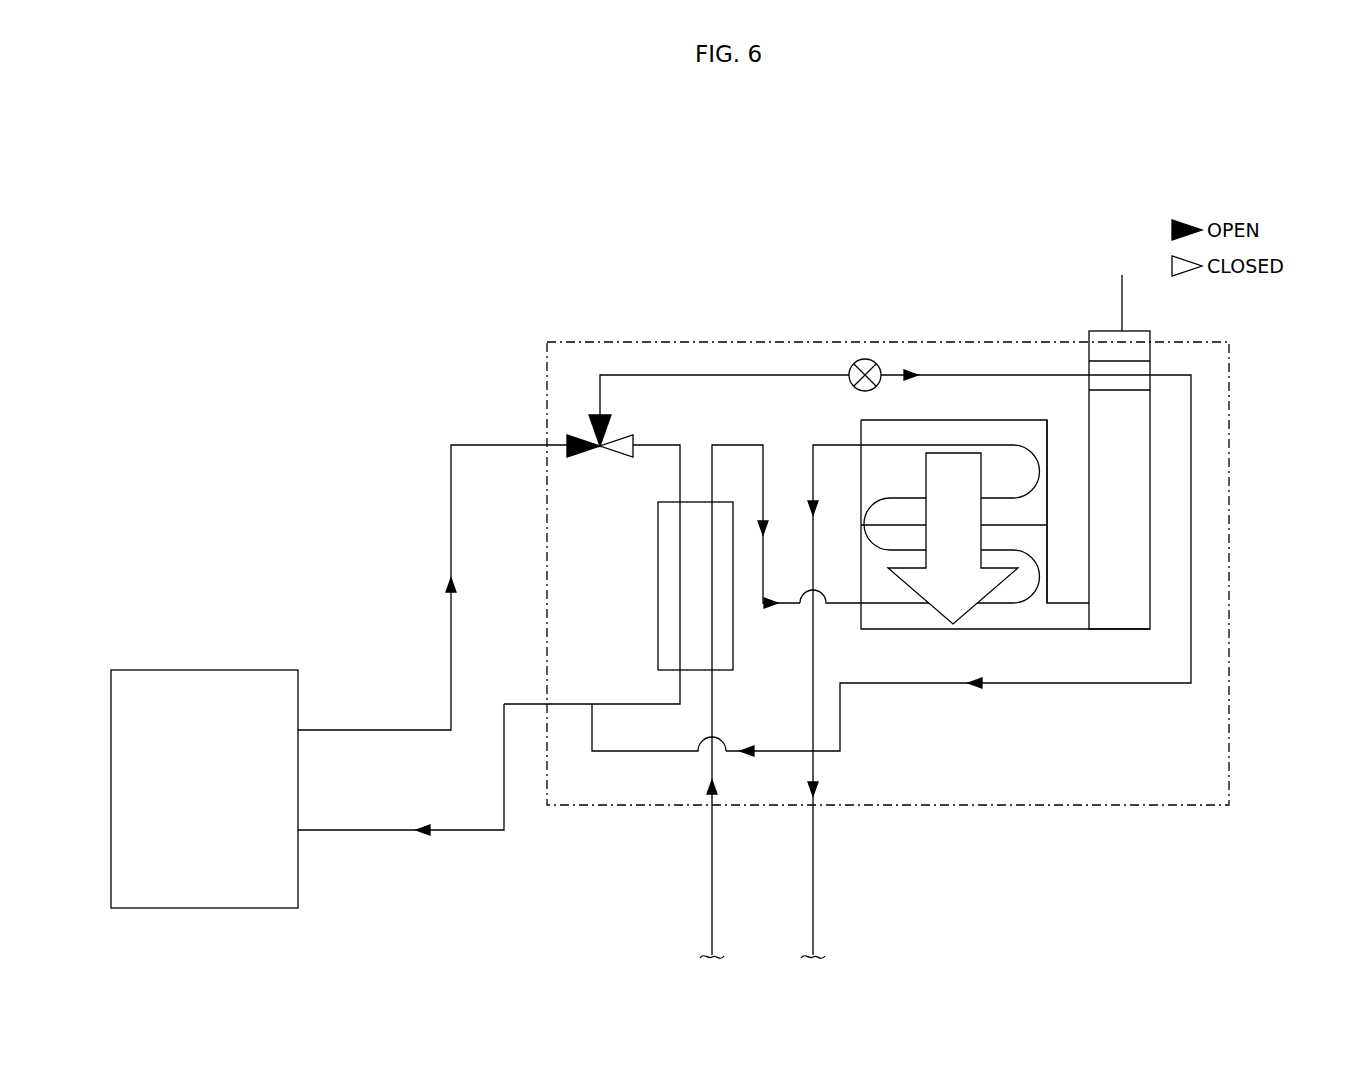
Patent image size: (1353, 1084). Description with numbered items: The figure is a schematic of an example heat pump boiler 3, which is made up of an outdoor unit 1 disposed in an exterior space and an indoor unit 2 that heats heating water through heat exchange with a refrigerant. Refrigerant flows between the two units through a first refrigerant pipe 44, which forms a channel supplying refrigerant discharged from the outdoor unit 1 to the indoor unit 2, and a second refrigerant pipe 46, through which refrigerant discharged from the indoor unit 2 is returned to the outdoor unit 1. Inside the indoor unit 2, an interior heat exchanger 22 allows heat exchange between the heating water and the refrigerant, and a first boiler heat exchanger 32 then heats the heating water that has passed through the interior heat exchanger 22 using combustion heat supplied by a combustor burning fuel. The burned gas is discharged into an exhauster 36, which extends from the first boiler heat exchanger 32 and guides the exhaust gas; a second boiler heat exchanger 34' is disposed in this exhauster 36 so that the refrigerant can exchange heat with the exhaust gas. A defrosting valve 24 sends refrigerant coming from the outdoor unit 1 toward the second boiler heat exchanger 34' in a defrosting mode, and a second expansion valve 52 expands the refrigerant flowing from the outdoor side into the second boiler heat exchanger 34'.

The outdoor unit 1 is at (250, 670).
The indoor unit 2 is at (587, 342).
The heat pump boiler 3 is at (1012, 412).
The interior heat exchanger 22 is at (658, 600).
The defrosting valve 24 is at (618, 438).
The first boiler heat exchanger 32 is at (1056, 510).
The second boiler heat exchanger 34' is at (1185, 480).
The exhauster 36 is at (1122, 289).
The first refrigerant pipe 44 is at (451, 492).
The second refrigerant pipe 46 is at (453, 830).
The second expansion valve 52 is at (866, 360).